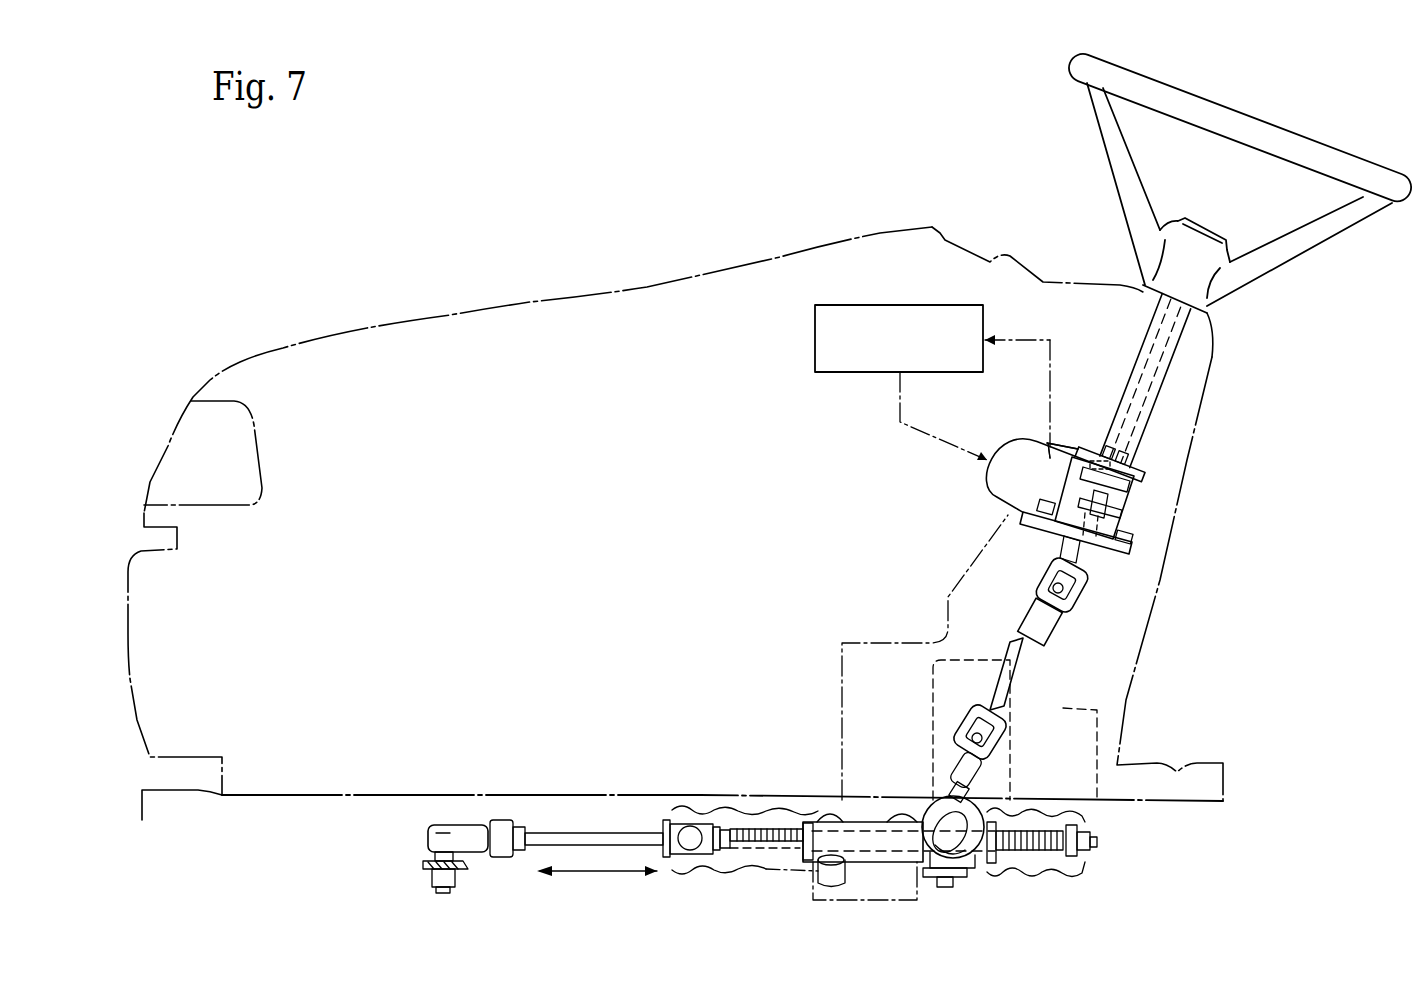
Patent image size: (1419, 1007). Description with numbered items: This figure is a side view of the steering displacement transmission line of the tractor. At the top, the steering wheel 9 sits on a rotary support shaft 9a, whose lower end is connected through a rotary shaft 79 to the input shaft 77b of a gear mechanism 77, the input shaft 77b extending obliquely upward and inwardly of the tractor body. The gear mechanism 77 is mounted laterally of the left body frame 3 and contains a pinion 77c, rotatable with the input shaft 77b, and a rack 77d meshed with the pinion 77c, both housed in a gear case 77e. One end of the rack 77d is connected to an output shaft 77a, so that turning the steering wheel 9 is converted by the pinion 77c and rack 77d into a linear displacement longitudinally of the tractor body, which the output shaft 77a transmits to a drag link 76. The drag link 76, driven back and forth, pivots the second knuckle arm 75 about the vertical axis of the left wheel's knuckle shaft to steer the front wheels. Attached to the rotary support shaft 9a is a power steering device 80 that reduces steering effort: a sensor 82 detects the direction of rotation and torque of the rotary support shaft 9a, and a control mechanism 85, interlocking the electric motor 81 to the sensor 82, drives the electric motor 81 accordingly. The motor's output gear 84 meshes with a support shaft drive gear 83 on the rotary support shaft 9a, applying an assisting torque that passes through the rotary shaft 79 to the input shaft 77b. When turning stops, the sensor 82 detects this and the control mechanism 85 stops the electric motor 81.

The body frame 3 is at (622, 794).
The steering wheel 9 is at (1273, 137).
The rotary support shaft 9a is at (1166, 344).
The second knuckle arm 75 is at (428, 855).
The drag link 76 is at (573, 835).
The gear mechanism 77 is at (865, 817).
The output shaft 77a is at (733, 823).
The input shaft 77b is at (997, 778).
The pinion 77c is at (927, 787).
The rack 77d is at (1033, 833).
The gear case 77e is at (882, 837).
The rotary shaft 79 is at (1020, 647).
The power steering device 80 is at (922, 460).
The electric motor 81 is at (1062, 438).
The sensor 82 is at (1147, 477).
The support shaft drive gear 83 is at (1062, 489).
The output gear 84 is at (1127, 510).
The control mechanism 85 is at (815, 333).